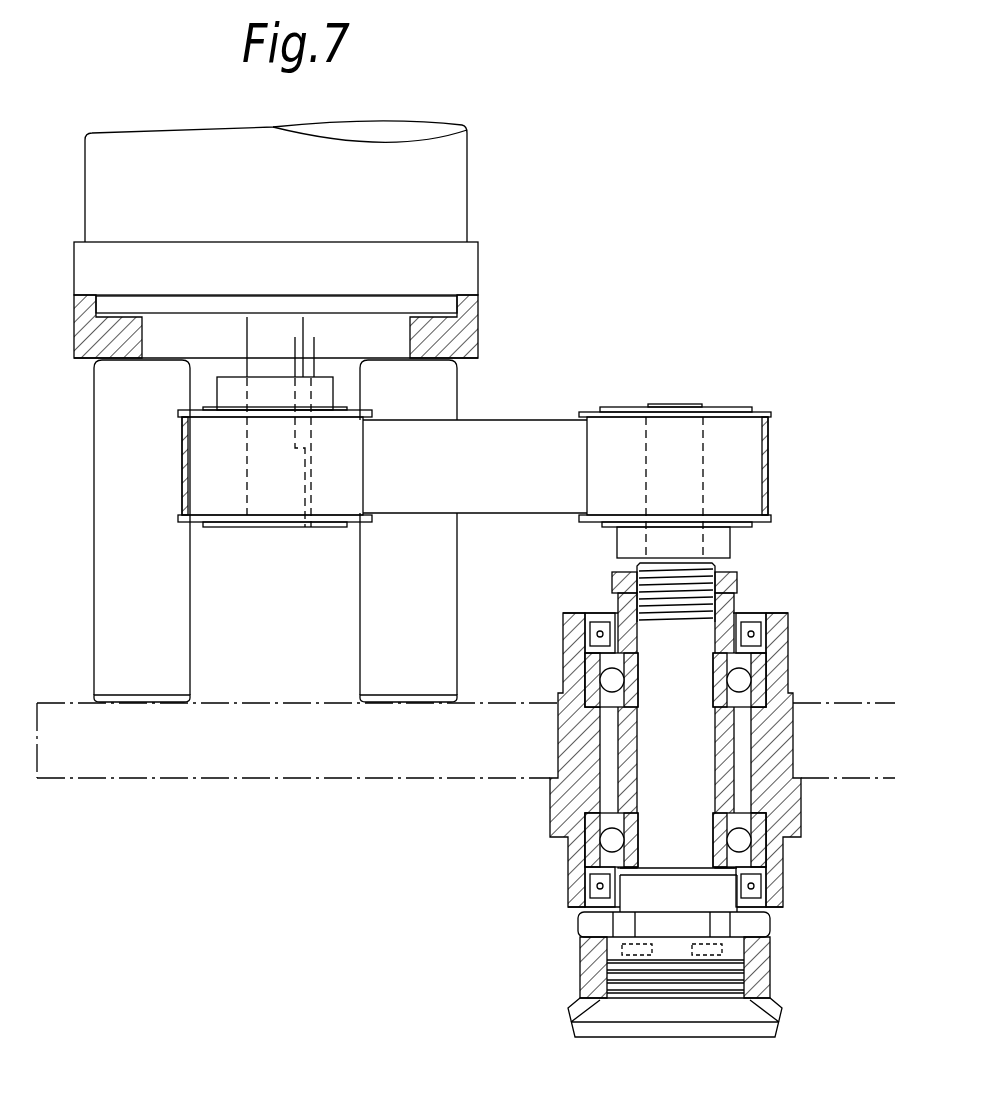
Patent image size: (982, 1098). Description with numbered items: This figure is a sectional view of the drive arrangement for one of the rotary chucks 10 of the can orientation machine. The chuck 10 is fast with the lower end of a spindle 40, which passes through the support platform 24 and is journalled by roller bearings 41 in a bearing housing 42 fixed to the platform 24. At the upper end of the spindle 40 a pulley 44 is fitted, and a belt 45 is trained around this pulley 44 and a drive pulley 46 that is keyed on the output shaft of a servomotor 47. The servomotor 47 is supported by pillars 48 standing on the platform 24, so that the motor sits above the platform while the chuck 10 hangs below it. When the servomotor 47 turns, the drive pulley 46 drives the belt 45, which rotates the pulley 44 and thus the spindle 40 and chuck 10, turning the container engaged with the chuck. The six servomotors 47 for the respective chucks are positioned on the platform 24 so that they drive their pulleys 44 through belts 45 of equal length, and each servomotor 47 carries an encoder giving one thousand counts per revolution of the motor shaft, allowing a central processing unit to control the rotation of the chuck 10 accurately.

The rotary chuck 10 is at (772, 975).
The support platform 24 is at (297, 750).
The spindle 40 is at (662, 788).
The roller bearings 41 is at (760, 671).
The bearing housing 42 is at (787, 827).
The pulley 44 is at (740, 469).
The belt 45 is at (522, 433).
The drive pulley 46 is at (333, 495).
The servomotor 47 is at (448, 187).
The pillars 48 is at (165, 650).